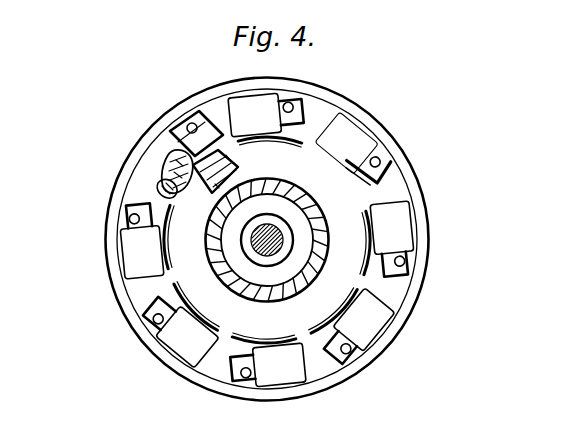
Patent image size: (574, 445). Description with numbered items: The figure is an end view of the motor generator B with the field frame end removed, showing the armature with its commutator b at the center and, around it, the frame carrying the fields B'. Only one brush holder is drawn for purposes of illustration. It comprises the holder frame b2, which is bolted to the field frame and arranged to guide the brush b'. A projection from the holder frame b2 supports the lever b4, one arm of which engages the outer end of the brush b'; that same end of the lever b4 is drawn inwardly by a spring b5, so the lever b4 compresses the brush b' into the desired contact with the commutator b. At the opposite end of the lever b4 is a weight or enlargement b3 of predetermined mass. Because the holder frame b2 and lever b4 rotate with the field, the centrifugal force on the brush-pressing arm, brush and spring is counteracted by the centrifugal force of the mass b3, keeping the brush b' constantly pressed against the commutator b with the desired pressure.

The commutator b is at (273, 239).
The brush b' is at (313, 215).
The brush holder frame b2 is at (222, 148).
The weight b3 is at (165, 172).
The lever b4 is at (167, 139).
The spring b5 is at (158, 189).
The motor generator B is at (442, 190).
The fields B' is at (105, 310).